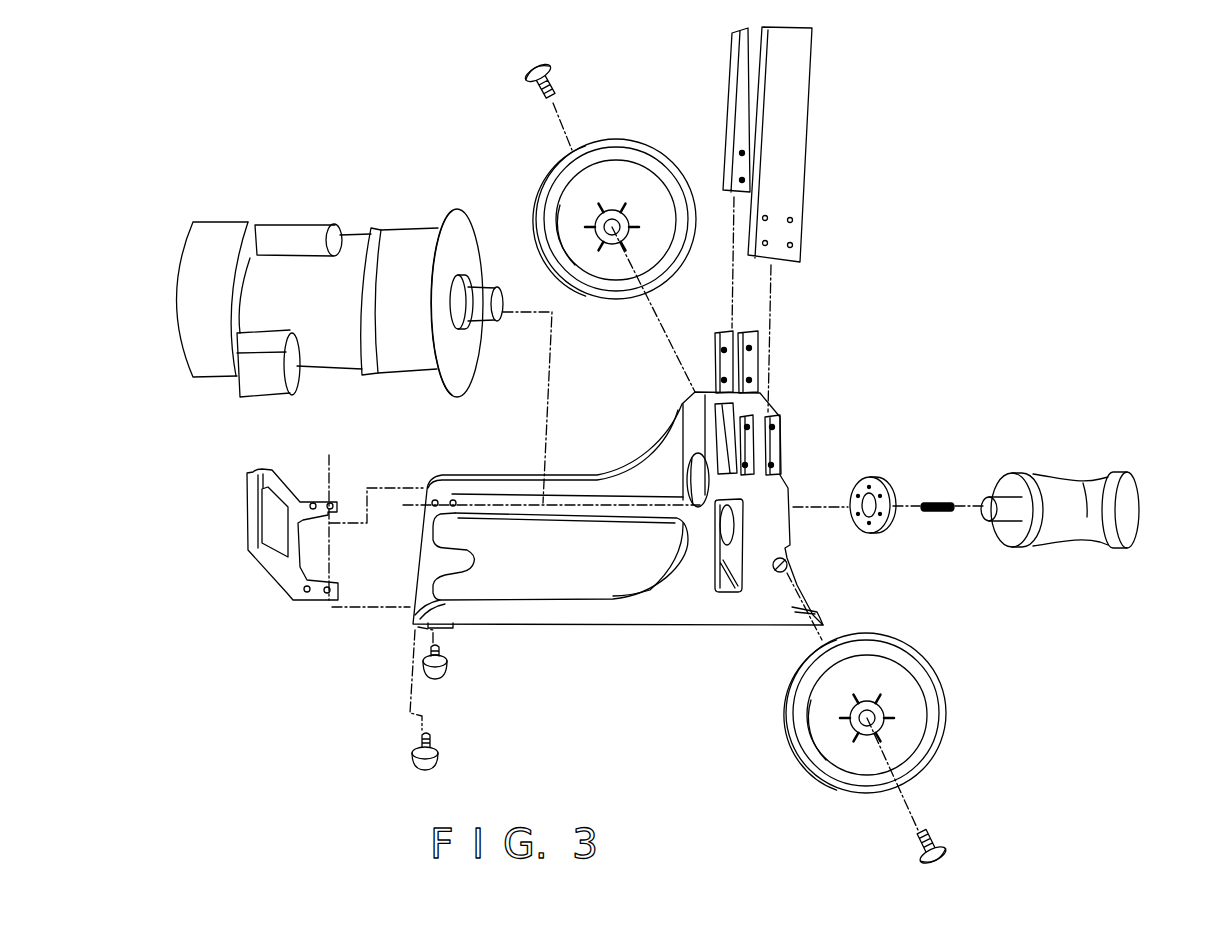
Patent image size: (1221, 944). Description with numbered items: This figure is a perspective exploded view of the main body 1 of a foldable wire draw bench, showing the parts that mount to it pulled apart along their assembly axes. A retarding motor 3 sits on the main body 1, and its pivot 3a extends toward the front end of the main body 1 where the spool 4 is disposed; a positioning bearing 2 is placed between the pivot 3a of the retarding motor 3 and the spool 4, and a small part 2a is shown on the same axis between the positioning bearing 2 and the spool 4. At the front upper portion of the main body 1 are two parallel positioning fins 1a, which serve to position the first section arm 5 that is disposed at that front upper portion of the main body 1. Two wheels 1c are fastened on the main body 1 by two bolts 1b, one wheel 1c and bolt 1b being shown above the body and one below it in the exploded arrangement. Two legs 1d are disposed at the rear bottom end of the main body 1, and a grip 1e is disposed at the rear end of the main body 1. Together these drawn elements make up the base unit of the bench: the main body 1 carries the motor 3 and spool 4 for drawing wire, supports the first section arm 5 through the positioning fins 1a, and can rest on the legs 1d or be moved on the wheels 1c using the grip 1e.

The main body 1 is at (668, 610).
The positioning fins 1a is at (826, 362).
The bolts 1b is at (523, 73).
The wheels 1c is at (558, 175).
The legs 1d is at (446, 662).
The grip 1e is at (260, 510).
The positioning bearing 2 is at (890, 482).
The key 2a is at (943, 500).
The retarding motor 3 is at (268, 227).
The pivot 3a is at (480, 299).
The spool 4 is at (1135, 475).
The first section arm 5 is at (797, 177).